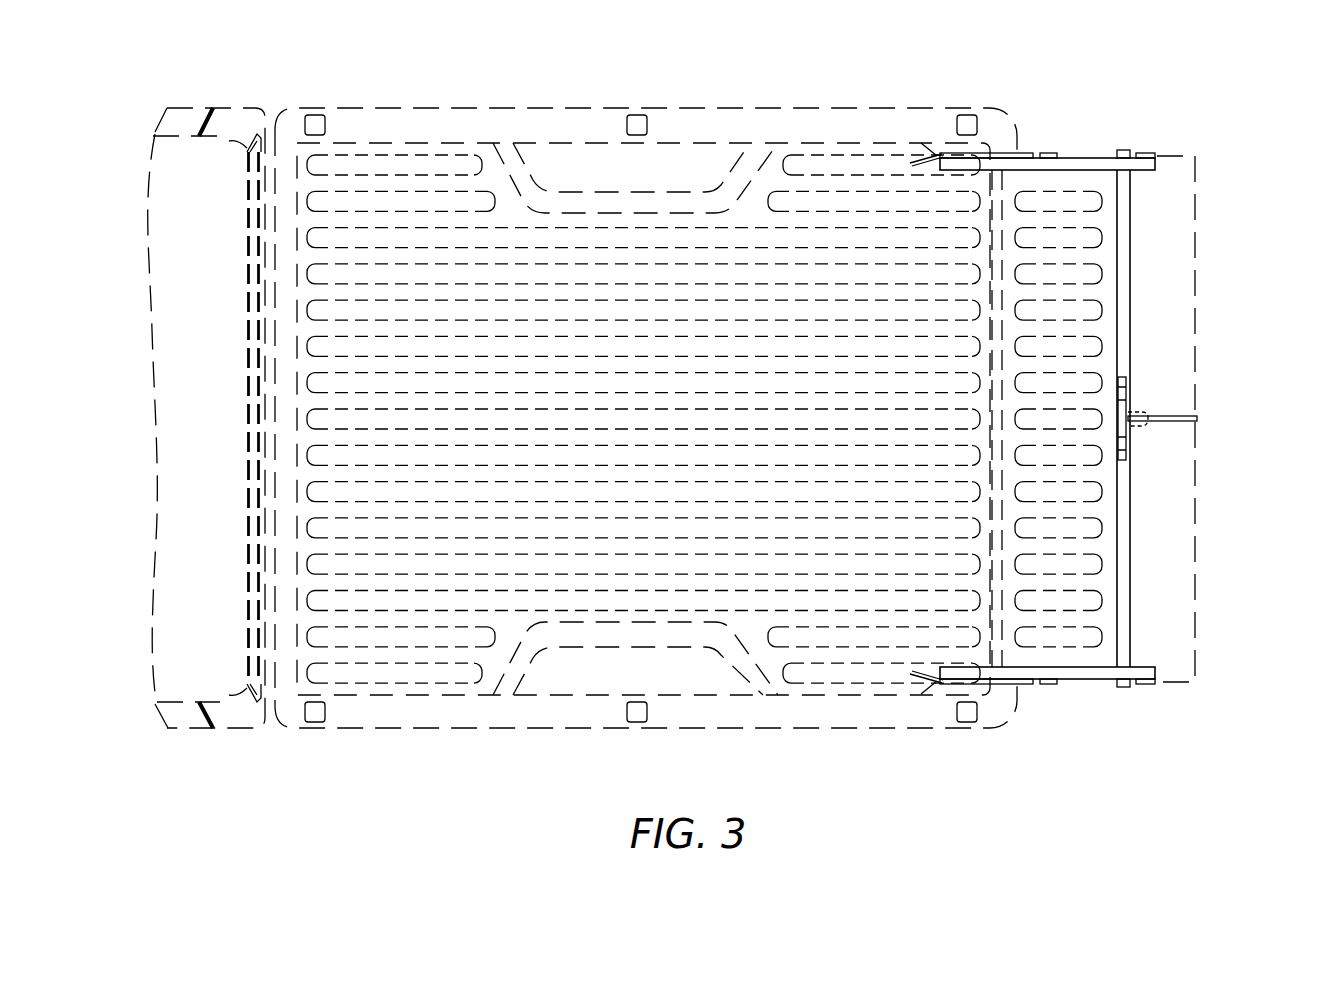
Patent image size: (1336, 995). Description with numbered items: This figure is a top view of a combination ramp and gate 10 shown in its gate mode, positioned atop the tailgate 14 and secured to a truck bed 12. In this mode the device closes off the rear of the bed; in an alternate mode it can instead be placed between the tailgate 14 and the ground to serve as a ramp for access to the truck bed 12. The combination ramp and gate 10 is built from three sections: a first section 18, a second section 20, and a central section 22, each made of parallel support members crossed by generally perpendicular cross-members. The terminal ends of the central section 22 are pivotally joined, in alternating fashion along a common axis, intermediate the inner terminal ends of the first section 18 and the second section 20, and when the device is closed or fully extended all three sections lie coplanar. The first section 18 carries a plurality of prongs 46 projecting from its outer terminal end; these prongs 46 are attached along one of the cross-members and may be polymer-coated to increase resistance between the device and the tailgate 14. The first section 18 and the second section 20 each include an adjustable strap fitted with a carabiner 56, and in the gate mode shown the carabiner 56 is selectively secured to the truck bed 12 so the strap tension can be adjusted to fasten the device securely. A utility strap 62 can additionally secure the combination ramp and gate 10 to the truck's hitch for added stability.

The combination ramp and gate 10 is at (1162, 103).
The truck bed 12 is at (788, 122).
The tailgate 14 is at (1102, 220).
The first section 18 is at (1075, 163).
The second section 20 is at (1123, 313).
The central section 22 is at (1073, 673).
The prongs 46 is at (937, 157).
The carabiner 56 is at (925, 690).
The utility strap 62 is at (1167, 422).